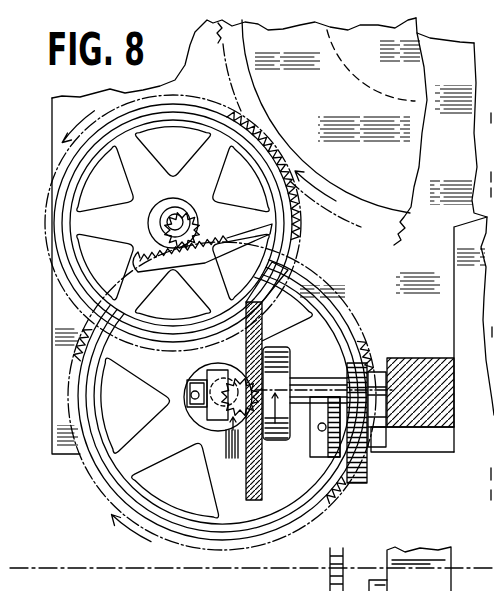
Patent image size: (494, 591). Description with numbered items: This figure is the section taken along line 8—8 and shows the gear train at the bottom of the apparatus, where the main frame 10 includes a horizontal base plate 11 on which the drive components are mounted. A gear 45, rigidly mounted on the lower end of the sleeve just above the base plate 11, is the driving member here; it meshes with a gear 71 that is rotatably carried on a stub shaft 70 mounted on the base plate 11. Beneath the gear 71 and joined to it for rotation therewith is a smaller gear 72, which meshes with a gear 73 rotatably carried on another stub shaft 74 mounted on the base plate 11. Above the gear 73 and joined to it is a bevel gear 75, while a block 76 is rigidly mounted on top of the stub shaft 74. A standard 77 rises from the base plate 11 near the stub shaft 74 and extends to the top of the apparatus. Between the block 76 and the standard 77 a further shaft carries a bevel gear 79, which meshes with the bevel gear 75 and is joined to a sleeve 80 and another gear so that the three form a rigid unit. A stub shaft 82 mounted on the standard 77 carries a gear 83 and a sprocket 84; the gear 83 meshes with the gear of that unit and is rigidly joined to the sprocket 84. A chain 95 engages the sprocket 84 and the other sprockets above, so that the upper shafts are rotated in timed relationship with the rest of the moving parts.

The stub shaft 8 is at (27, 558).
The main frame 10 is at (49, 367).
The horizontal base plate 11 is at (65, 318).
The gear 45 is at (272, 130).
The stub shaft 70 is at (193, 217).
The gear 71 is at (262, 130).
The smaller gear 72 is at (140, 258).
The gear 73 is at (200, 253).
The stub shaft 74 is at (187, 393).
The bevel gear 75 is at (207, 395).
The block 76 is at (218, 418).
The standard 77 is at (429, 403).
The bevel gear 79 is at (250, 470).
The sleeve 80 is at (307, 390).
The stub shaft 82 is at (313, 447).
The gear 83 is at (368, 470).
The sprocket 84 is at (322, 437).
The chain 95 is at (322, 490).